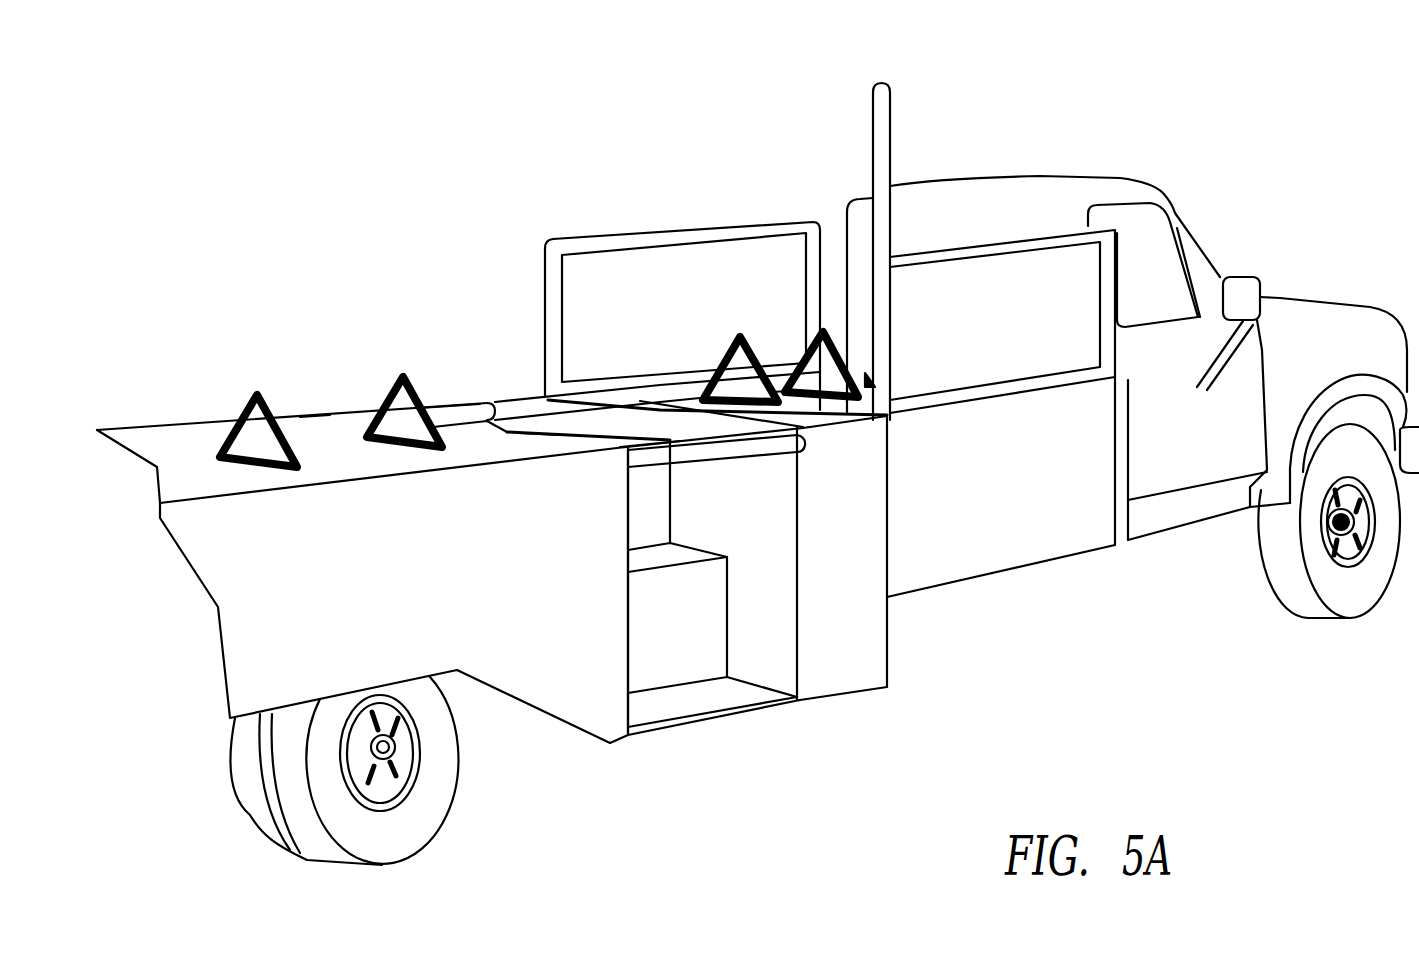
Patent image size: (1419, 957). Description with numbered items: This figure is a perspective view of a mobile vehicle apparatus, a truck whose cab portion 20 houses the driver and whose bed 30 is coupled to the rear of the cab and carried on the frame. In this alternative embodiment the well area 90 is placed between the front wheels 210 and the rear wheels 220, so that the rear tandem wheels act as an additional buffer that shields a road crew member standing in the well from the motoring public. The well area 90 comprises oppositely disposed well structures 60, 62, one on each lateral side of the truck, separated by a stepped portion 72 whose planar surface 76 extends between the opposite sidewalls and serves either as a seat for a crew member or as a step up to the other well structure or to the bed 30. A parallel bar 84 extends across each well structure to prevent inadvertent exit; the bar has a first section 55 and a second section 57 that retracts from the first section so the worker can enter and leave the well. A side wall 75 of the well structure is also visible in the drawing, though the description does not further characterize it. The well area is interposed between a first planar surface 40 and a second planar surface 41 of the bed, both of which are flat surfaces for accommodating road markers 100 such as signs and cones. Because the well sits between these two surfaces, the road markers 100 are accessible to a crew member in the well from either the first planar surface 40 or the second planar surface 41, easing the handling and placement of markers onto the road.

The cab portion 20 is at (1063, 173).
The bed 30 is at (315, 432).
The first planar surface 40 is at (653, 393).
The second planar surface 41 is at (200, 487).
The first section 55 is at (635, 455).
The second section 57 is at (767, 445).
The well structure 60 is at (747, 737).
The well structure 62 is at (443, 383).
The stepped portion 72 is at (660, 557).
The toolbox side wall 75 is at (647, 635).
The planar surface 76 is at (553, 430).
The parallel bar 84 is at (435, 412).
The well area 90 is at (478, 375).
The road markers 100 is at (247, 407).
The front wheels 210 is at (1288, 597).
The rear wheels 220 is at (417, 833).